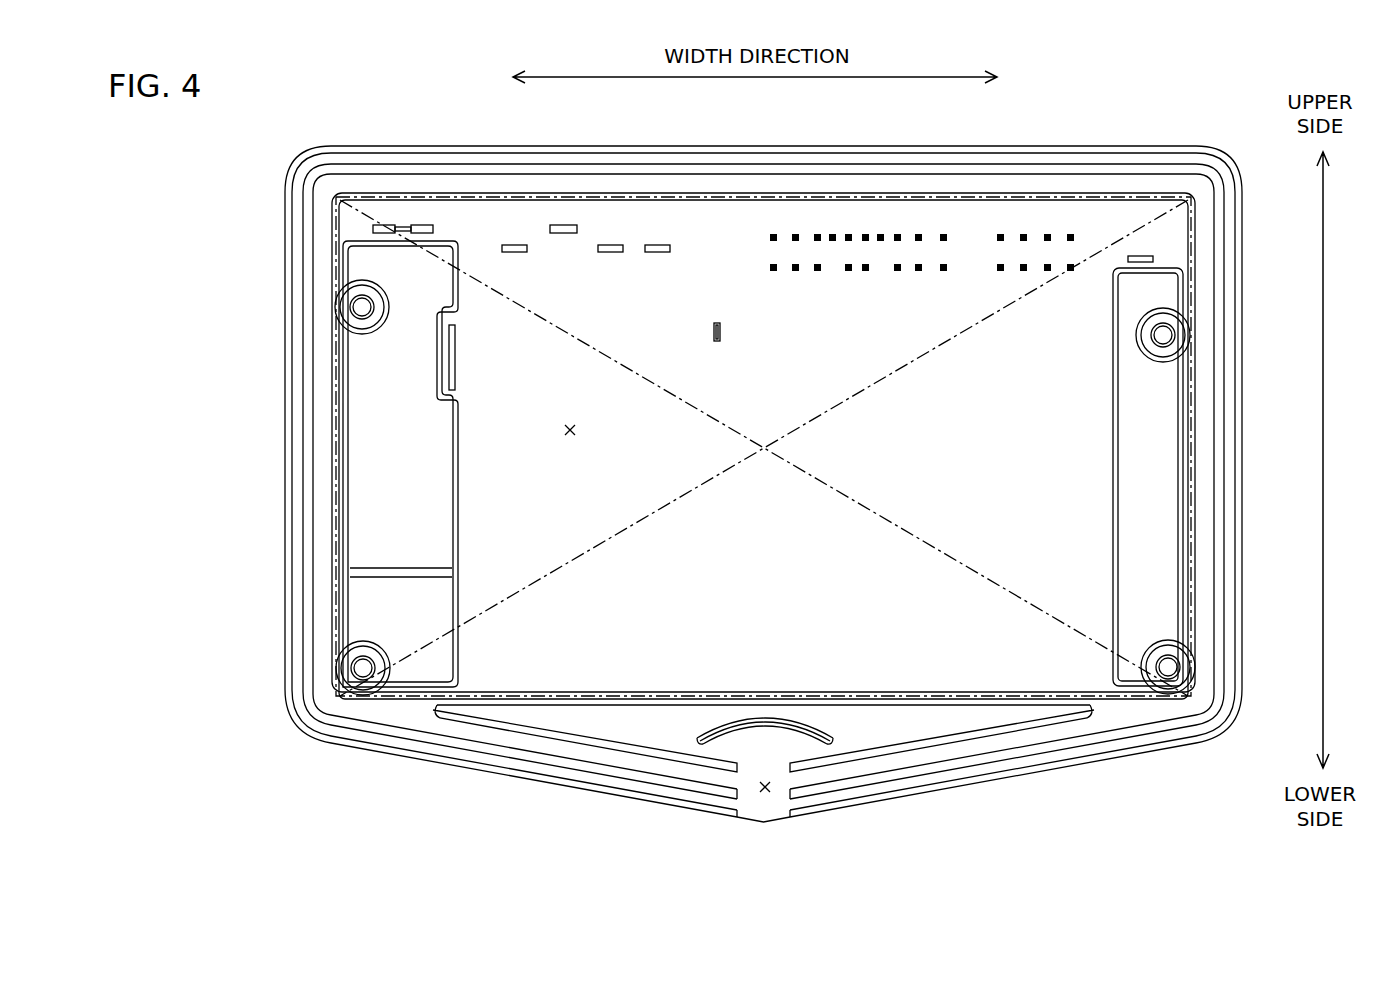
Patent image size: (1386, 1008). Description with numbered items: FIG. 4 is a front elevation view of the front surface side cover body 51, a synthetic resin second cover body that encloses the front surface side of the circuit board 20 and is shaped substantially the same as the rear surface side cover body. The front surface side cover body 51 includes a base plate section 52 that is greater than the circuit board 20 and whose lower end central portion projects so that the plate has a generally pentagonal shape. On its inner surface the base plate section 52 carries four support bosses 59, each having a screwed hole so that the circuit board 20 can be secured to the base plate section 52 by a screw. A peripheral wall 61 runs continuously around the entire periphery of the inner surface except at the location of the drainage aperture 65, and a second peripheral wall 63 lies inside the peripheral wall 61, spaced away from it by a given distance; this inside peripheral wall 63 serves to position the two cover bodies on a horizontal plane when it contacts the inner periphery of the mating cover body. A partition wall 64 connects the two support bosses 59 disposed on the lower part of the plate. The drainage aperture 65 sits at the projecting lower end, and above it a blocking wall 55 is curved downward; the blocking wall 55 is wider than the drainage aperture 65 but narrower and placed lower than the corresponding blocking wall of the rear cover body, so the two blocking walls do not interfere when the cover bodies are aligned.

The circuit board 20 is at (1022, 295).
The front surface side cover body 51 is at (413, 807).
The base plate section 52 is at (568, 432).
The blocking wall 55 is at (760, 727).
The support boss 59 is at (362, 307).
The peripheral wall 61 is at (755, 168).
The peripheral wall 63 is at (691, 192).
The partition wall 64 is at (843, 695).
The drainage aperture 65 is at (765, 787).